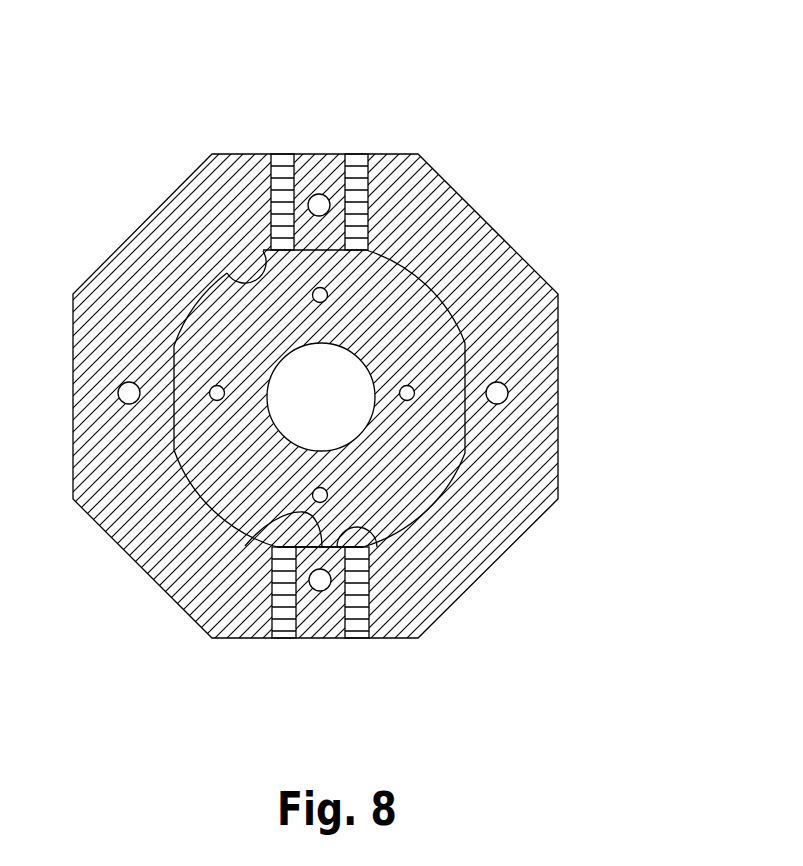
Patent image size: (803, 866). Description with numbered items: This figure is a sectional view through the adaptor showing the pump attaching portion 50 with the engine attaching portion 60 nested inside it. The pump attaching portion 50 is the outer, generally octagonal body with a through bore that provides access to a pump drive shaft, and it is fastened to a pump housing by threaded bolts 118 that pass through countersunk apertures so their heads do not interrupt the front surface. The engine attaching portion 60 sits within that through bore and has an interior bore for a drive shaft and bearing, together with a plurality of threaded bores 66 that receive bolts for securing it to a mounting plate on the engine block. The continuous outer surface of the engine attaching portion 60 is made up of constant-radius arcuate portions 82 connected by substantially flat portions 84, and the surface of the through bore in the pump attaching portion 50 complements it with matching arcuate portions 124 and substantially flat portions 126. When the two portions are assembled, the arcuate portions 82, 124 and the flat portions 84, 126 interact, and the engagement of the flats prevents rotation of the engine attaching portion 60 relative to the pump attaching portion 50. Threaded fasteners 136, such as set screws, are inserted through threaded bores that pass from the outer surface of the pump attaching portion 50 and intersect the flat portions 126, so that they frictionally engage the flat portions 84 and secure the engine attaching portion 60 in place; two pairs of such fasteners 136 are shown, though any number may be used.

The pump attaching portion 50 is at (191, 193).
The engine attaching portion 60 is at (404, 334).
The threaded bores 66 is at (332, 291).
The arcuate portions 82 is at (225, 274).
The substantially flat portions 84 is at (368, 530).
The threaded bolts 118 is at (509, 393).
The arcuate portions 124 is at (242, 546).
The substantially flat portions 126 is at (308, 548).
The threaded fasteners 136 is at (347, 154).